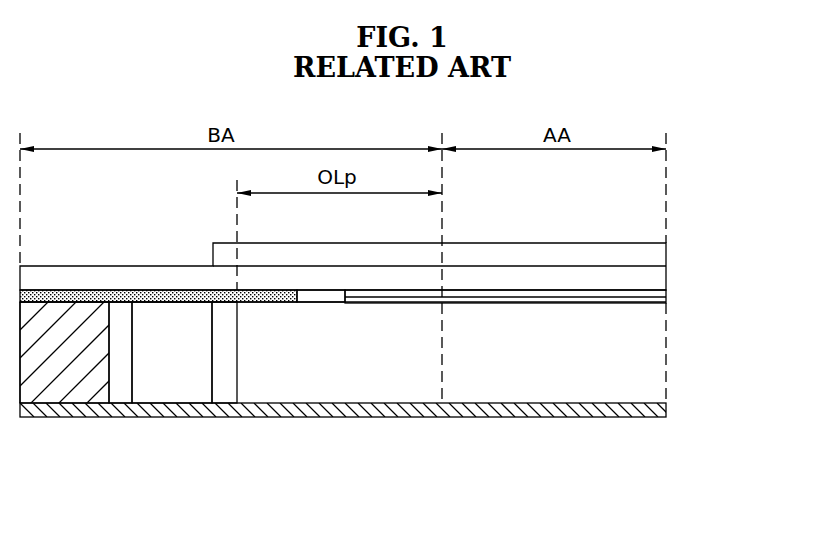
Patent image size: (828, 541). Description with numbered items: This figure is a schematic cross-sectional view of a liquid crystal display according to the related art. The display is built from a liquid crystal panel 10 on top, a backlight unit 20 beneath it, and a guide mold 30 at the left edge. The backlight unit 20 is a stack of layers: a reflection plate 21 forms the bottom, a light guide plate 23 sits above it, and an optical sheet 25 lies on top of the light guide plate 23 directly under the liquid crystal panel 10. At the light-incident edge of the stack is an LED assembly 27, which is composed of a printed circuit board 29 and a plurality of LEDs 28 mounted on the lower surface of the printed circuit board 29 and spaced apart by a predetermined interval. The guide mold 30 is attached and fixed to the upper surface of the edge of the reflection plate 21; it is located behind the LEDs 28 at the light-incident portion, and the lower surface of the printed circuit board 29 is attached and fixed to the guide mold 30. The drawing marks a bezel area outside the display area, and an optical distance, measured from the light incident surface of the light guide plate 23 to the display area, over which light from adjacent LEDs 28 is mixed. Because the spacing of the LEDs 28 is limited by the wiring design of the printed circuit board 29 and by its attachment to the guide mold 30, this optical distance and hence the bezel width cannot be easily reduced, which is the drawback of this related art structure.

The liquid crystal panel 10 is at (655, 255).
The backlight unit 20 is at (410, 400).
The reflection plate 21 is at (374, 413).
The light guide plate 23 is at (657, 358).
The optical sheet 25 is at (660, 292).
The LED assembly 27 is at (173, 402).
The LEDs 28 is at (150, 393).
The printed circuit board 29 is at (183, 293).
The guide mold 30 is at (77, 395).